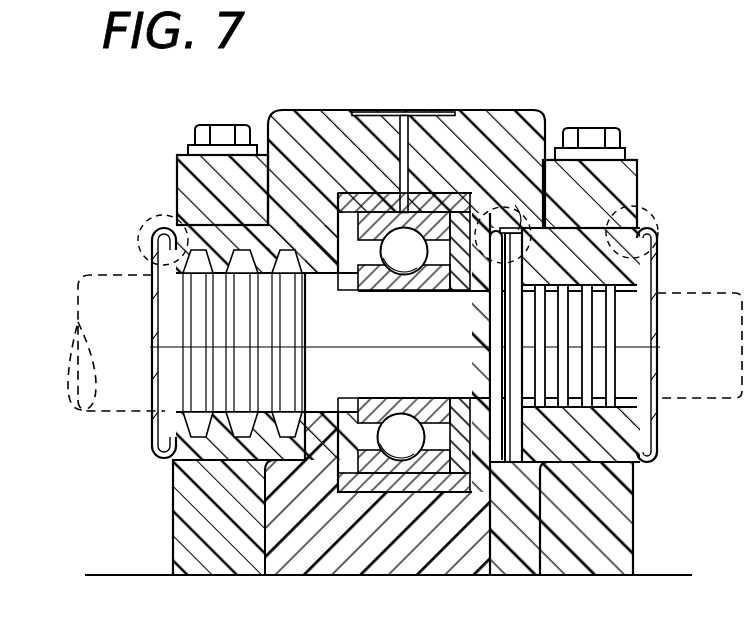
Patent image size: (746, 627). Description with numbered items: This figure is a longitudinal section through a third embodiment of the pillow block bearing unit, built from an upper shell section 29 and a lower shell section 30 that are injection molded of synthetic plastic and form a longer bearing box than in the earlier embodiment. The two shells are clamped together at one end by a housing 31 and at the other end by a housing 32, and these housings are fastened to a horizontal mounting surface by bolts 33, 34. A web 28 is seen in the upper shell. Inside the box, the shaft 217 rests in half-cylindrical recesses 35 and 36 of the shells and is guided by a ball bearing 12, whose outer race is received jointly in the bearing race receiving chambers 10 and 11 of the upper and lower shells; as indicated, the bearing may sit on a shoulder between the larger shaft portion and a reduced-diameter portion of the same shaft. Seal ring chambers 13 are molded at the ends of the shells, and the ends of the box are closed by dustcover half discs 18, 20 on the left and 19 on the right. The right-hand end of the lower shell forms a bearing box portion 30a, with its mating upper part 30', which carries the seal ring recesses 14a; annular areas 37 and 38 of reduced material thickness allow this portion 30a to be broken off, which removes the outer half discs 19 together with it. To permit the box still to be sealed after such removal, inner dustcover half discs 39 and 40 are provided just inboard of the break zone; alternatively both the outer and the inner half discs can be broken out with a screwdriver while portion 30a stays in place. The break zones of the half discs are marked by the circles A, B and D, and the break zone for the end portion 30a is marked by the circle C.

The bearing race receiving chamber 10 is at (489, 206).
The bearing race receiving chamber 11 is at (397, 494).
The ball bearing 12 is at (400, 432).
The seal ring chamber 13 is at (176, 449).
The seal ring recess 14a is at (598, 284).
The dustcover half disc 18 is at (150, 316).
The dustcover half disc 19 is at (655, 324).
The dustcover half disc 20 is at (130, 409).
The housing web 28 is at (408, 136).
The upper shell section 29 is at (300, 134).
The lower shell section 30 is at (388, 413).
The bearing box portion 30a is at (600, 258).
The pulley flange shell 30' is at (660, 349).
The housing 31 is at (196, 178).
The housing 32 is at (618, 174).
The bolt 33 is at (236, 104).
The bolt 34 is at (597, 135).
The half-cylindrical recess 35 is at (218, 318).
The half-cylindrical recess 36 is at (340, 393).
The annular area of reduced thickness 37 is at (560, 206).
The annular area of reduced thickness 38 is at (524, 462).
The inner dustcover half disc 39 is at (520, 210).
The inner dustcover half disc 40 is at (492, 442).
The shaft 217 is at (73, 387).
The break zone circle A is at (162, 211).
The break zone circle B is at (502, 207).
The break zone circle C is at (536, 226).
The break zone circle D is at (646, 219).